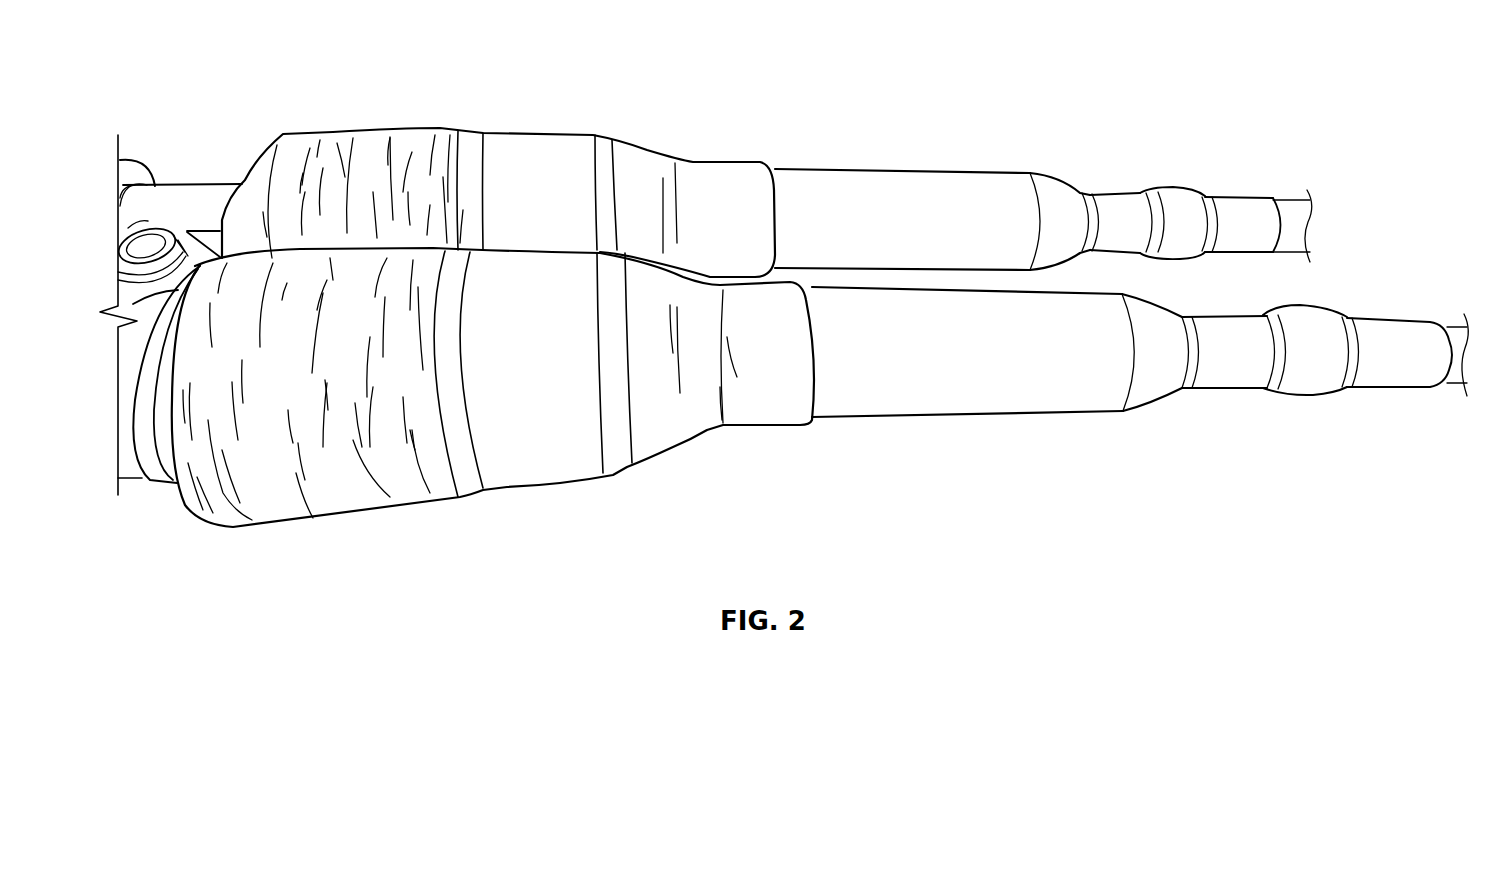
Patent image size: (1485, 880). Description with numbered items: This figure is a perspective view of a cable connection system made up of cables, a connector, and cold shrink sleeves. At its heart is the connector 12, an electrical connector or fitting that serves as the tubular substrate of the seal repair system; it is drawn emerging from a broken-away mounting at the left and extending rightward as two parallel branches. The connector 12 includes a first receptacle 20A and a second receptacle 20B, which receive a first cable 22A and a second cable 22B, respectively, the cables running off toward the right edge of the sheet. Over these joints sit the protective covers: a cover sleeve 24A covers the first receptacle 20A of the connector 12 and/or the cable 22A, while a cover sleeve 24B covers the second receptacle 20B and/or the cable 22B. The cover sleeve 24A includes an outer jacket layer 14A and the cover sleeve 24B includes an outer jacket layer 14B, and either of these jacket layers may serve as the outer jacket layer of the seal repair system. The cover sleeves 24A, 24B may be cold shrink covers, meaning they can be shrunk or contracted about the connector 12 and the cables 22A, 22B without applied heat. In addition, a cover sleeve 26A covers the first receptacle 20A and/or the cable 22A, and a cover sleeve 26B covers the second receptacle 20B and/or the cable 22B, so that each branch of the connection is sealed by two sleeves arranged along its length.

The connector 12 is at (135, 498).
The outer jacket layer 14A is at (473, 428).
The outer jacket layer 14B is at (498, 157).
The first receptacle 20A is at (1080, 437).
The second receptacle 20B is at (1037, 165).
The first cable 22A is at (1447, 327).
The second cable 22B is at (1290, 200).
The cover sleeve 24A is at (358, 527).
The cover sleeve 24B is at (472, 76).
The cover sleeve 26A is at (1140, 397).
The cover sleeve 26B is at (1043, 165).